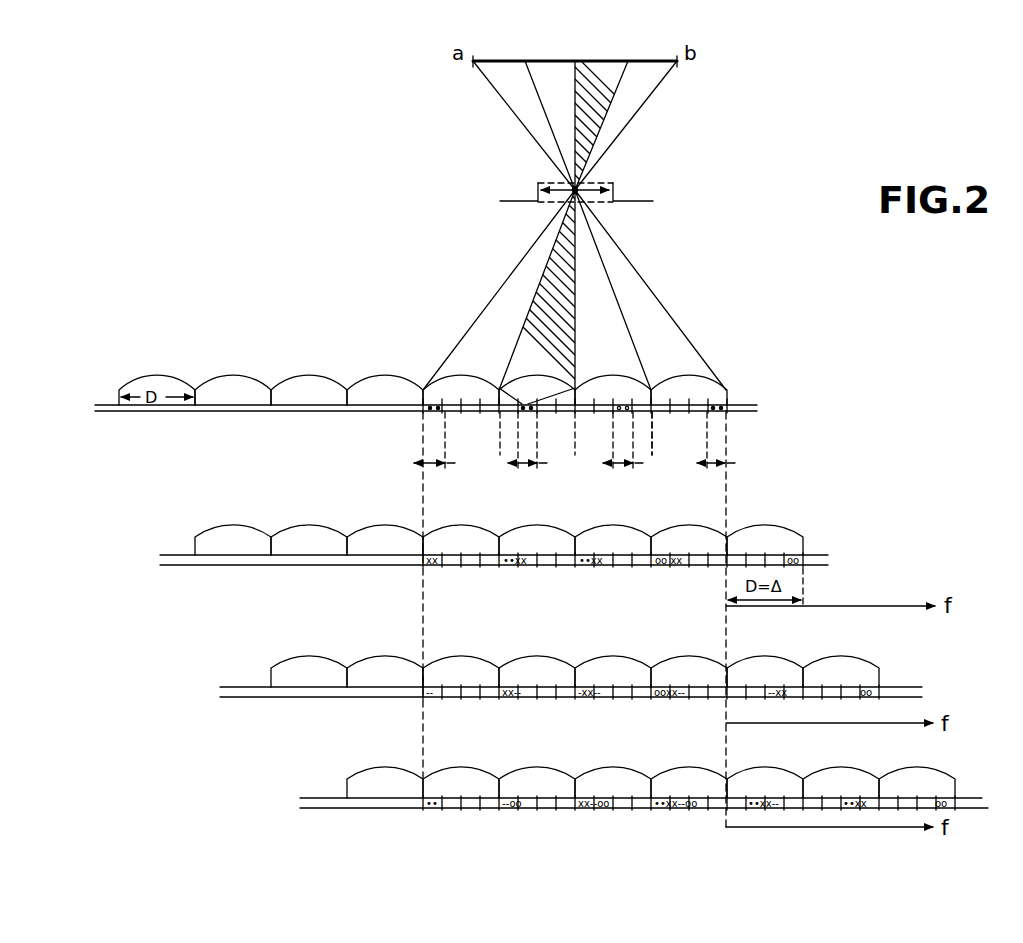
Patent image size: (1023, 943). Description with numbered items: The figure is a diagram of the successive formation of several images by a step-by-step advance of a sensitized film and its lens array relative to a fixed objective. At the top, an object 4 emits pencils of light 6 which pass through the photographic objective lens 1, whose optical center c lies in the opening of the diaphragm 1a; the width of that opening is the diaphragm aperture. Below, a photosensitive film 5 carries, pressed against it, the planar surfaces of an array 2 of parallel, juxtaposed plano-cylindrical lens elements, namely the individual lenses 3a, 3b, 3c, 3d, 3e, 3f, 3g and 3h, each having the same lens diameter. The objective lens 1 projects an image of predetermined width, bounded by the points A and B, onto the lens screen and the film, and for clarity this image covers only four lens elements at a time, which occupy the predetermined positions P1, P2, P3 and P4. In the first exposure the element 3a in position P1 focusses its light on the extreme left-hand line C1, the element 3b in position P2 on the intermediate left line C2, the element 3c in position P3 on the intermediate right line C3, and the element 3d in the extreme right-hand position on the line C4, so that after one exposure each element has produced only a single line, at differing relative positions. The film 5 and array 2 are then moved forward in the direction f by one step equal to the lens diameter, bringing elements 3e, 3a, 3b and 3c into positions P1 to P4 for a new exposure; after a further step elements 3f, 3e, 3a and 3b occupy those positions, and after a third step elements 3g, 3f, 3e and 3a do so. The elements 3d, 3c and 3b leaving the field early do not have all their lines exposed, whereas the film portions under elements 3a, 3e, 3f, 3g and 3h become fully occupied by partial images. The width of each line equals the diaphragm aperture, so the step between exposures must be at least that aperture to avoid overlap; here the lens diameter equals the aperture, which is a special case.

The photographic objective lens 1 is at (645, 199).
The diaphragm 1a is at (534, 188).
The array of lens elements 2 is at (281, 371).
The lens element 3a is at (473, 374).
The lens element 3b is at (535, 374).
The lens element 3c is at (603, 374).
The lens element 3d is at (663, 374).
The lens element 3e is at (380, 374).
The lens element 3f is at (308, 374).
The lens element 3g is at (237, 374).
The lens element 3h is at (162, 374).
The object 4 is at (658, 62).
The photosensitive film 5 is at (311, 413).
The pencil of light 6 is at (606, 92).
The optical center c is at (570, 188).
The image width end A is at (423, 387).
The image width end B is at (729, 388).
The line C1 is at (434, 450).
The intermediate left line C2 is at (527, 450).
The intermediate right line C3 is at (623, 450).
The extreme right-hand line C4 is at (716, 450).
The position P1 is at (480, 433).
The position P2 is at (560, 433).
The position P3 is at (617, 433).
The position P4 is at (671, 433).